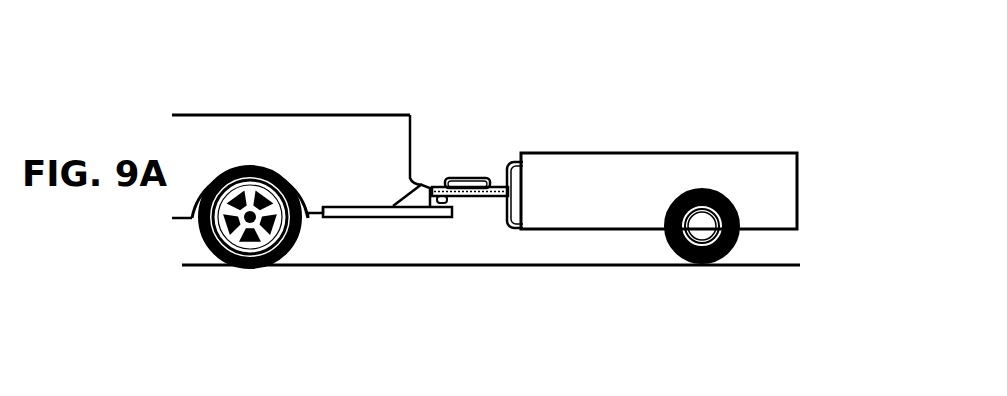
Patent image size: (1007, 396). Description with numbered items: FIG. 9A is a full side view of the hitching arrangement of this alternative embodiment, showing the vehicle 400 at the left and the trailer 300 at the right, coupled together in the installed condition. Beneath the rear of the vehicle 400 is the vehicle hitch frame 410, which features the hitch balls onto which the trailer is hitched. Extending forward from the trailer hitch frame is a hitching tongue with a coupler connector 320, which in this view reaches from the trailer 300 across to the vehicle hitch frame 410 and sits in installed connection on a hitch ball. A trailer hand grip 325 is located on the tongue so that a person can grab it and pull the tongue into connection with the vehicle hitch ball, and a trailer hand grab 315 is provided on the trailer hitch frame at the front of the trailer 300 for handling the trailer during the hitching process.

The vehicle 400 is at (302, 145).
The vehicle hitch frame 410 is at (430, 220).
The coupler connector 320 is at (495, 192).
The trailer hand grip 325 is at (470, 177).
The trailer hand grab 315 is at (512, 235).
The trailer 300 is at (572, 185).